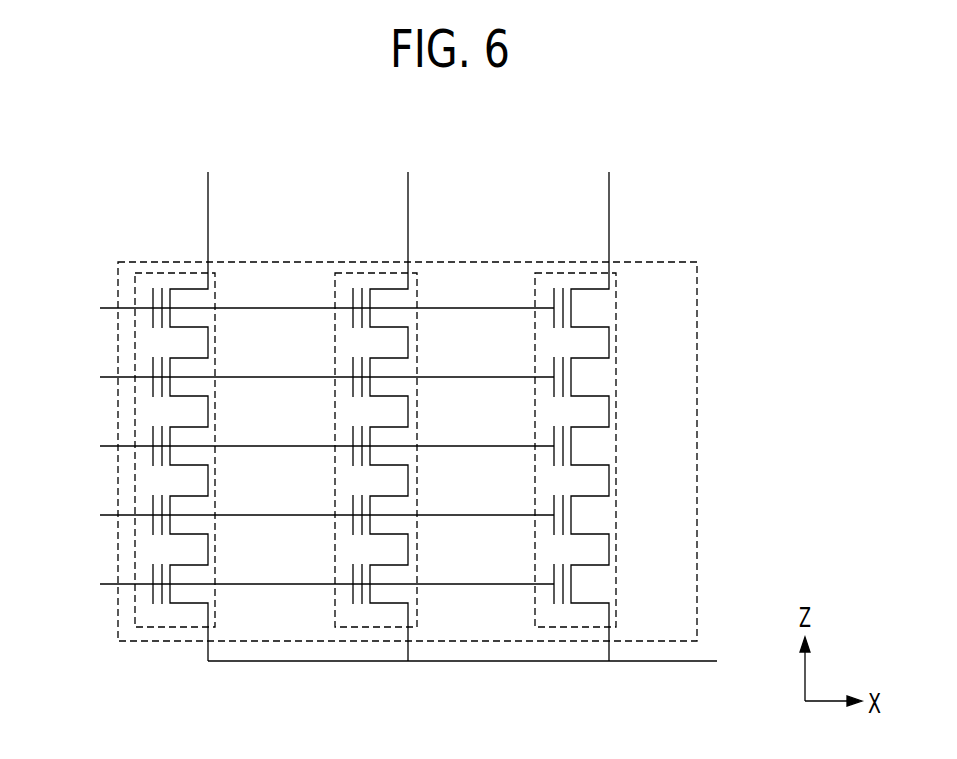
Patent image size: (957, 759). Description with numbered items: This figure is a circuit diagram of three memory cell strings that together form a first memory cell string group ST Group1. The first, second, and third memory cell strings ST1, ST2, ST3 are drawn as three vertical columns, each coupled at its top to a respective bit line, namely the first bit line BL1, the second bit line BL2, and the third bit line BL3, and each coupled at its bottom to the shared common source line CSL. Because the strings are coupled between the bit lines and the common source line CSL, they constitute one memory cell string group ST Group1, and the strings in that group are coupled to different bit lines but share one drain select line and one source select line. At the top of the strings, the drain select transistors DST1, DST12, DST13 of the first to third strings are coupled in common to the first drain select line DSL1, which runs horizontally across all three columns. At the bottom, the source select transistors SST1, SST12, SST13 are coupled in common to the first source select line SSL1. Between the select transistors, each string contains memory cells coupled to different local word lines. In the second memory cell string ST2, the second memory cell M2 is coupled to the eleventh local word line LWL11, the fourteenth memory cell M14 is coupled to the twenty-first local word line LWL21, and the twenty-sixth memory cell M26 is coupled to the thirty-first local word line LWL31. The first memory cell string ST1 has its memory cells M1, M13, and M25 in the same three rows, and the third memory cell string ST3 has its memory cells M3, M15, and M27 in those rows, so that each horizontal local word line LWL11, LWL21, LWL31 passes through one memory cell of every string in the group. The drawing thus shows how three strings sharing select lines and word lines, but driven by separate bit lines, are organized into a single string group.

The first memory cell string group ST Group1 is at (697, 349).
The first memory cell string ST1 is at (176, 272).
The second memory cell string ST2 is at (375, 272).
The third memory cell string ST3 is at (575, 272).
The first bit line BL1 is at (196, 402).
The second bit line BL2 is at (396, 402).
The third bit line BL3 is at (597, 402).
The common source line CSL is at (480, 664).
The first drain select line DSL1 is at (305, 307).
The 31-st local word line LWL31 is at (299, 376).
The 21-st local word line LWL21 is at (299, 445).
The eleventh local word line LWL11 is at (299, 514).
The first source select line SSL1 is at (306, 583).
The drain select transistor DST1 is at (208, 308).
The drain select transistor DST12 is at (412, 308).
The drain select transistor DST13 is at (613, 308).
The memory cell M25 is at (204, 377).
The 26-th memory cell M26 is at (404, 377).
The memory cell M27 is at (605, 377).
The memory cell M13 is at (204, 446).
The fourteenth memory cell M14 is at (404, 446).
The memory cell M15 is at (605, 446).
The memory cell M1 is at (199, 515).
The second memory cell M2 is at (399, 515).
The memory cell M3 is at (600, 515).
The source select transistor SST1 is at (206, 584).
The source select transistor SST12 is at (412, 584).
The source select transistor SST13 is at (613, 584).